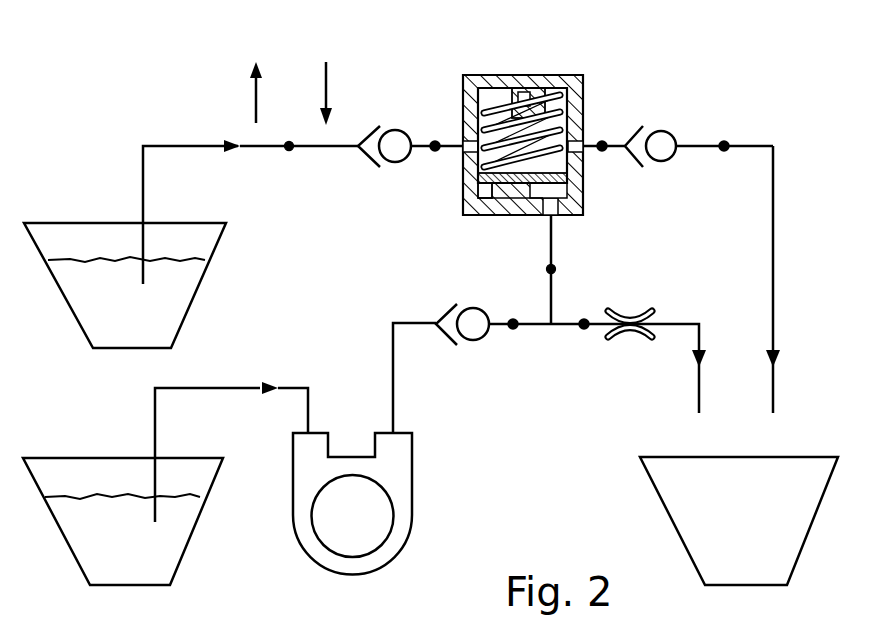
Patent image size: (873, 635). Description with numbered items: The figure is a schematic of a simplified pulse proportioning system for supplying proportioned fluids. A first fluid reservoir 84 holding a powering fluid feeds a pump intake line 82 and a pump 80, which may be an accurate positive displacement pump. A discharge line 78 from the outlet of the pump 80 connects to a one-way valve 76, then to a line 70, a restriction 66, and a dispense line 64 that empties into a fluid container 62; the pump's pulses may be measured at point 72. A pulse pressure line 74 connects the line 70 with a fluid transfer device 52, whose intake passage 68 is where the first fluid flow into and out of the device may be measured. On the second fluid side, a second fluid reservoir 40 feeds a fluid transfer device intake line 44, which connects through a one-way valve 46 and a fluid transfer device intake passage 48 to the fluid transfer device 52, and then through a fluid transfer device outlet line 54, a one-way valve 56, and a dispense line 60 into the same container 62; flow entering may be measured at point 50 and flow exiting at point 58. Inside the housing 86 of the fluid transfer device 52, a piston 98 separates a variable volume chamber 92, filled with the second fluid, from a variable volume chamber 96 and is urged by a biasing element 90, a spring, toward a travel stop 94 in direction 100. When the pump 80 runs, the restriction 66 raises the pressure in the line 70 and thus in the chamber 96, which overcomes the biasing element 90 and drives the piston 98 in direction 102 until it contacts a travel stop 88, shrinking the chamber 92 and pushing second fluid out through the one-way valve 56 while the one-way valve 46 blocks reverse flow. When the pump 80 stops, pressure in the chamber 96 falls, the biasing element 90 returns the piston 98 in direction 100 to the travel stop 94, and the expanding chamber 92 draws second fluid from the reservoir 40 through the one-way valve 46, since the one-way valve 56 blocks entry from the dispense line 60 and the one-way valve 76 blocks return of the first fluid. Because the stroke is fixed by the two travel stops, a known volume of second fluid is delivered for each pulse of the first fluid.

The second fluid reservoir 40 is at (78, 327).
The fluid transfer device intake line 44 is at (143, 192).
The one-way valve 46 is at (371, 125).
The fluid transfer device intake passage 48 is at (432, 150).
The point 50 is at (289, 148).
The fluid transfer device 52 is at (536, 142).
The fluid transfer device outlet line 54 is at (603, 150).
The one-way valve 56 is at (666, 131).
The point 58 is at (724, 150).
The dispense line 60 is at (773, 230).
The fluid container 62 is at (659, 495).
The dispense line 64 is at (698, 383).
The restriction 66 is at (622, 310).
The intake passage 68 is at (553, 269).
The line 70 is at (527, 330).
The point 72 is at (513, 328).
The pulse pressure line 74 is at (551, 249).
The one-way valve 76 is at (446, 308).
The discharge line 78 is at (393, 350).
The pump 80 is at (413, 477).
The pump intake line 82 is at (218, 387).
The first fluid reservoir 84 is at (189, 540).
The housing 86 is at (575, 75).
The travel stop 88 is at (545, 75).
The biasing element 90 is at (562, 112).
The variable volume chamber 92 is at (490, 88).
The travel stop 94 is at (490, 215).
The variable volume chamber 96 is at (478, 188).
The piston 98 is at (478, 190).
The direction 100 is at (327, 78).
The direction 102 is at (255, 77).